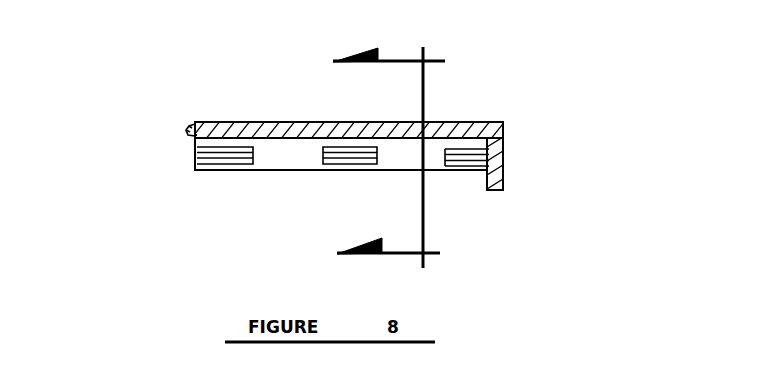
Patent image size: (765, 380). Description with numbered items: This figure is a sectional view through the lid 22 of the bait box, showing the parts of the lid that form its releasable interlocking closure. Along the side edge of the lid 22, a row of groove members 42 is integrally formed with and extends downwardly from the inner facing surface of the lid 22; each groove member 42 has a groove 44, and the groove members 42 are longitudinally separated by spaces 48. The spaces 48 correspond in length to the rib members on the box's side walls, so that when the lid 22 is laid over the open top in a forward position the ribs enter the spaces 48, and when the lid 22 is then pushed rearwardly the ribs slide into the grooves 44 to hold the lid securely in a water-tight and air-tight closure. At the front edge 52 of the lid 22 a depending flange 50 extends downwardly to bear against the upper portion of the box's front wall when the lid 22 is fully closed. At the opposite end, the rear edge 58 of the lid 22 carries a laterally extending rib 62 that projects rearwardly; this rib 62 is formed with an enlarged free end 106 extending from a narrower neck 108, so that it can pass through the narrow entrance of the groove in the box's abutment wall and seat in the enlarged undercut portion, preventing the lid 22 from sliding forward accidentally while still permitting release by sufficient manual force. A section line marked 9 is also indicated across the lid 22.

The lid 22 is at (357, 122).
The spaces 48 is at (308, 152).
The grooves 44 is at (212, 155).
The groove members 42 is at (213, 168).
The laterally extending rib 62 is at (197, 133).
The rear edge 58 is at (194, 121).
The neck 108 is at (188, 124).
The enlarged free end 106 is at (184, 128).
The depending flange 50 is at (505, 172).
The front edge 52 is at (505, 143).
The section line 9- 9 is at (389, 149).